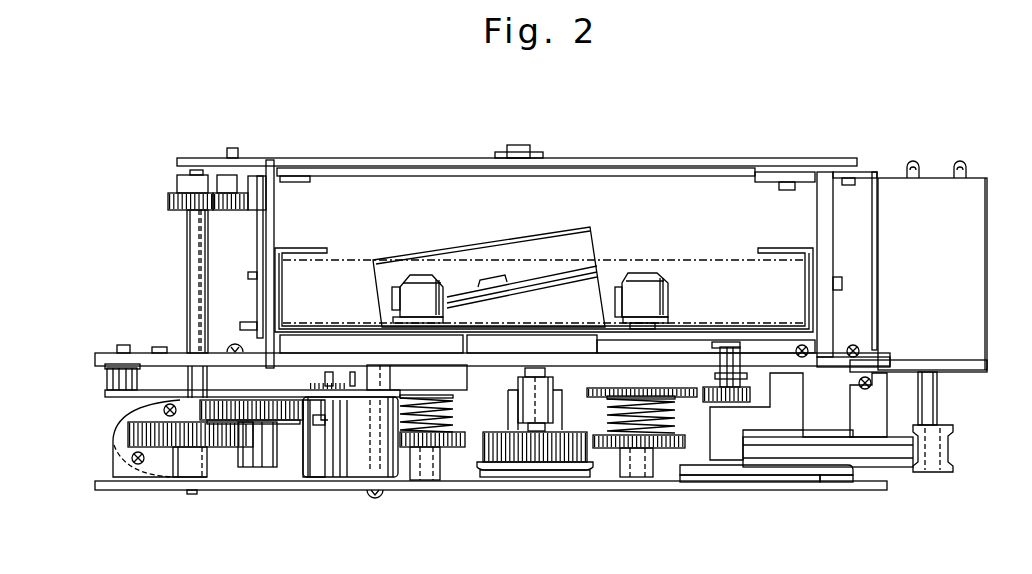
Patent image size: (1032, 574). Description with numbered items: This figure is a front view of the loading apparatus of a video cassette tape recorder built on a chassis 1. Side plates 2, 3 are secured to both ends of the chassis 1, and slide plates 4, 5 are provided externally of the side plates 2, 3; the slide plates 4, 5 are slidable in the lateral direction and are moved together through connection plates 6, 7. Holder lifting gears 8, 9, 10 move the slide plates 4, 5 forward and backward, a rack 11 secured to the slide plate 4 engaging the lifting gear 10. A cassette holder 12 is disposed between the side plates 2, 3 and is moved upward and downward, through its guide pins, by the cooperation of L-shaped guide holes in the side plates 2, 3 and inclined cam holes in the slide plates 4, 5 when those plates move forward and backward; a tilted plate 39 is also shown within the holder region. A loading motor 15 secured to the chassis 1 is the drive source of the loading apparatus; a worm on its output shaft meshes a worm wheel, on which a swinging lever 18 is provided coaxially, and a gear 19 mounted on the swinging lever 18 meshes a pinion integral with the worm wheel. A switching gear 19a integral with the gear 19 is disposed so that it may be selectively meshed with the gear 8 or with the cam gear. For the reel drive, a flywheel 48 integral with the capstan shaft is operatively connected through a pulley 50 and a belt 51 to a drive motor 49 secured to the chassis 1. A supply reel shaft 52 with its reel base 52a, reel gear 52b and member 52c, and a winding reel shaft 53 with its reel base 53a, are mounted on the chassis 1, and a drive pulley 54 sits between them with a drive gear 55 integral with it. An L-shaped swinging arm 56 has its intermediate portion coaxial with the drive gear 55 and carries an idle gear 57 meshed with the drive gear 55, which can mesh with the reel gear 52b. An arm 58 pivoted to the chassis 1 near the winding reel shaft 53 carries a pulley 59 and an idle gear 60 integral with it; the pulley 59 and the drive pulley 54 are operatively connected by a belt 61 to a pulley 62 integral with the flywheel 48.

The chassis 1 is at (878, 378).
The side plate 2 is at (270, 160).
The side plate 3 is at (820, 182).
The slide plate 4 is at (260, 253).
The slide plate 5 is at (835, 233).
The connection plate 6 is at (685, 160).
The connection plate 7 is at (628, 173).
The holder lifting gear 8 is at (130, 437).
The holder lifting gear 9 is at (168, 205).
The holder lifting gear 10 is at (237, 183).
The rack 11 is at (253, 207).
The cassette holder 12 is at (773, 247).
The loading motor 15 is at (123, 448).
The swinging lever 18 is at (302, 473).
The gear 19 is at (222, 403).
The switching gear 19a is at (262, 467).
The tilted plate 39 is at (530, 250).
The flywheel 48 is at (880, 487).
The drive motor 49 is at (957, 275).
The pulley 50 is at (957, 450).
The belt 51 is at (893, 453).
The supply reel shaft 52 is at (420, 273).
The reel base 52a is at (380, 340).
The reel gear 52b is at (422, 447).
The gear 52c is at (700, 397).
The winding reel shaft 53 is at (642, 273).
The reel base 53a is at (673, 340).
The drive pulley 54 is at (540, 477).
The drive gear 55 is at (503, 457).
The swinging arm 56 is at (517, 390).
The idle gear 57 is at (548, 440).
The arm 58 is at (783, 415).
The pulley 59 is at (728, 487).
The idle gear 60 is at (740, 383).
The belt 61 is at (822, 487).
The pulley 62 is at (833, 490).